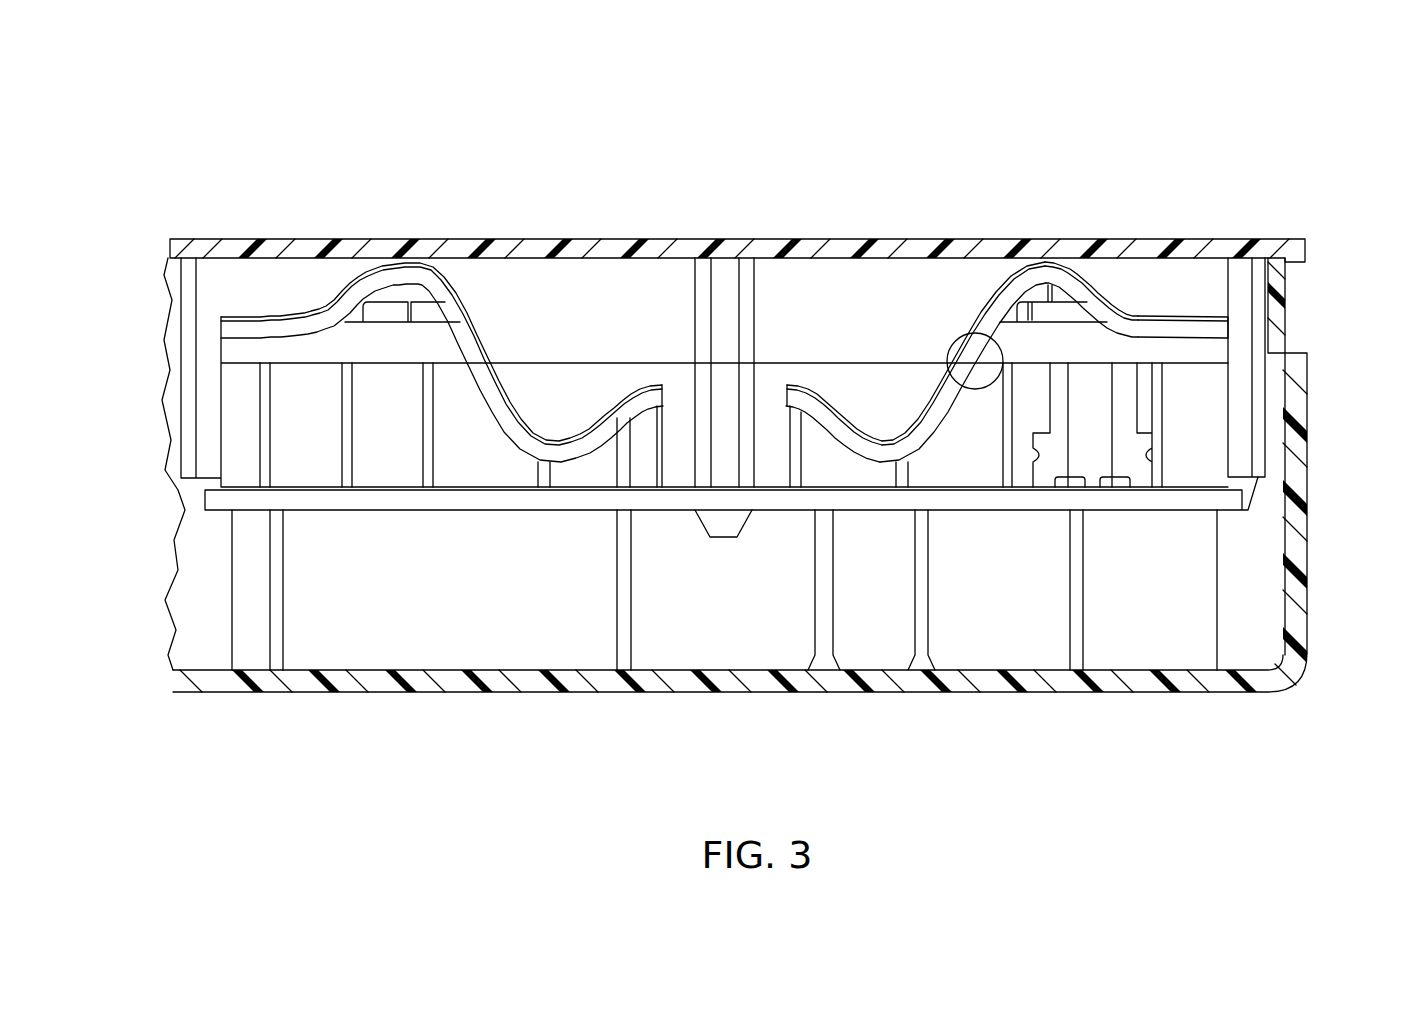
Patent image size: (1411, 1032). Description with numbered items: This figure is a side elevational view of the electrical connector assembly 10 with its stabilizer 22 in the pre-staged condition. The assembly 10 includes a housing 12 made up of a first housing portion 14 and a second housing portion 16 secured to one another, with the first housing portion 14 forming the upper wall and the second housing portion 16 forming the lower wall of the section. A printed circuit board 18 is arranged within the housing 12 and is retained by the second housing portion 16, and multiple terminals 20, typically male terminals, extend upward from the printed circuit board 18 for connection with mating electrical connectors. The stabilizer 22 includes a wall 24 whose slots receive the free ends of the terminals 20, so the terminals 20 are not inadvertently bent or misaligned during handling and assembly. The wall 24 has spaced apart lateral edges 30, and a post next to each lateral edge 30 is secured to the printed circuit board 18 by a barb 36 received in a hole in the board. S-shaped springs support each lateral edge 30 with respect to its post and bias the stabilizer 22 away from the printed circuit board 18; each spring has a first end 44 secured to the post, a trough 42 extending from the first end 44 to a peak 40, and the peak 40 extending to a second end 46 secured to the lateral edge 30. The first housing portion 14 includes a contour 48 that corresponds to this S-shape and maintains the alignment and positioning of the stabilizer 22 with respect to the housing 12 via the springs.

The electrical connector assembly 10 is at (1285, 198).
The housing 12 is at (127, 220).
The first housing portion 14 is at (818, 239).
The second housing portion 16 is at (503, 684).
The printed circuit board 18 is at (1000, 499).
The terminals 20 is at (1110, 411).
The stabilizer 22 is at (1056, 296).
The wall 24 is at (1215, 330).
The lateral edges 30 is at (1079, 340).
The barb 36 is at (720, 519).
The peak 40 is at (1040, 277).
The trough 42 is at (876, 452).
The first end 44 is at (805, 409).
The second end 46 is at (1177, 332).
The contour 48 is at (994, 334).